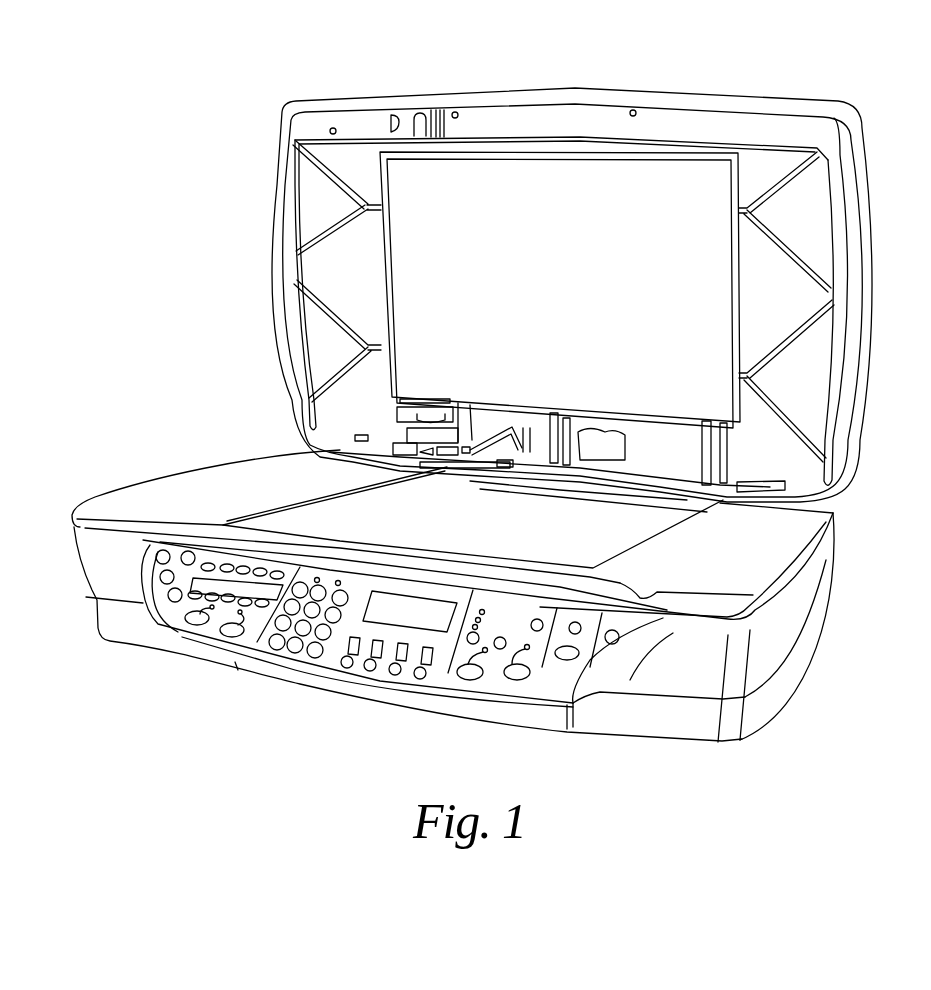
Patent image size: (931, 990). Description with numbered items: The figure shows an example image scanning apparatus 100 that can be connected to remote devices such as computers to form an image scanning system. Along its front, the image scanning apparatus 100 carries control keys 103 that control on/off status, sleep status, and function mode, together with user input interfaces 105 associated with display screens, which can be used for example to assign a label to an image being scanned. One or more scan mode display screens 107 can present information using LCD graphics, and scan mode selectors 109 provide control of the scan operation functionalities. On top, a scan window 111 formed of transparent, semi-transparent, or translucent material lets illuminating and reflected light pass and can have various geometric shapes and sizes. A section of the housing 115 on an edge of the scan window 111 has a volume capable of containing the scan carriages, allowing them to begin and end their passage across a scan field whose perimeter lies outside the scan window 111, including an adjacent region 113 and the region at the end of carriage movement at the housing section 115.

The image scanning apparatus 100 is at (158, 73).
The control keys 103 is at (152, 604).
The user input interfaces 105 is at (318, 689).
The scan mode display screens 107 is at (350, 631).
The scan mode selectors 109 is at (413, 713).
The scan window 111 is at (345, 500).
The region adjacent to the scan window 113 is at (378, 560).
The section of the housing 115 is at (643, 600).